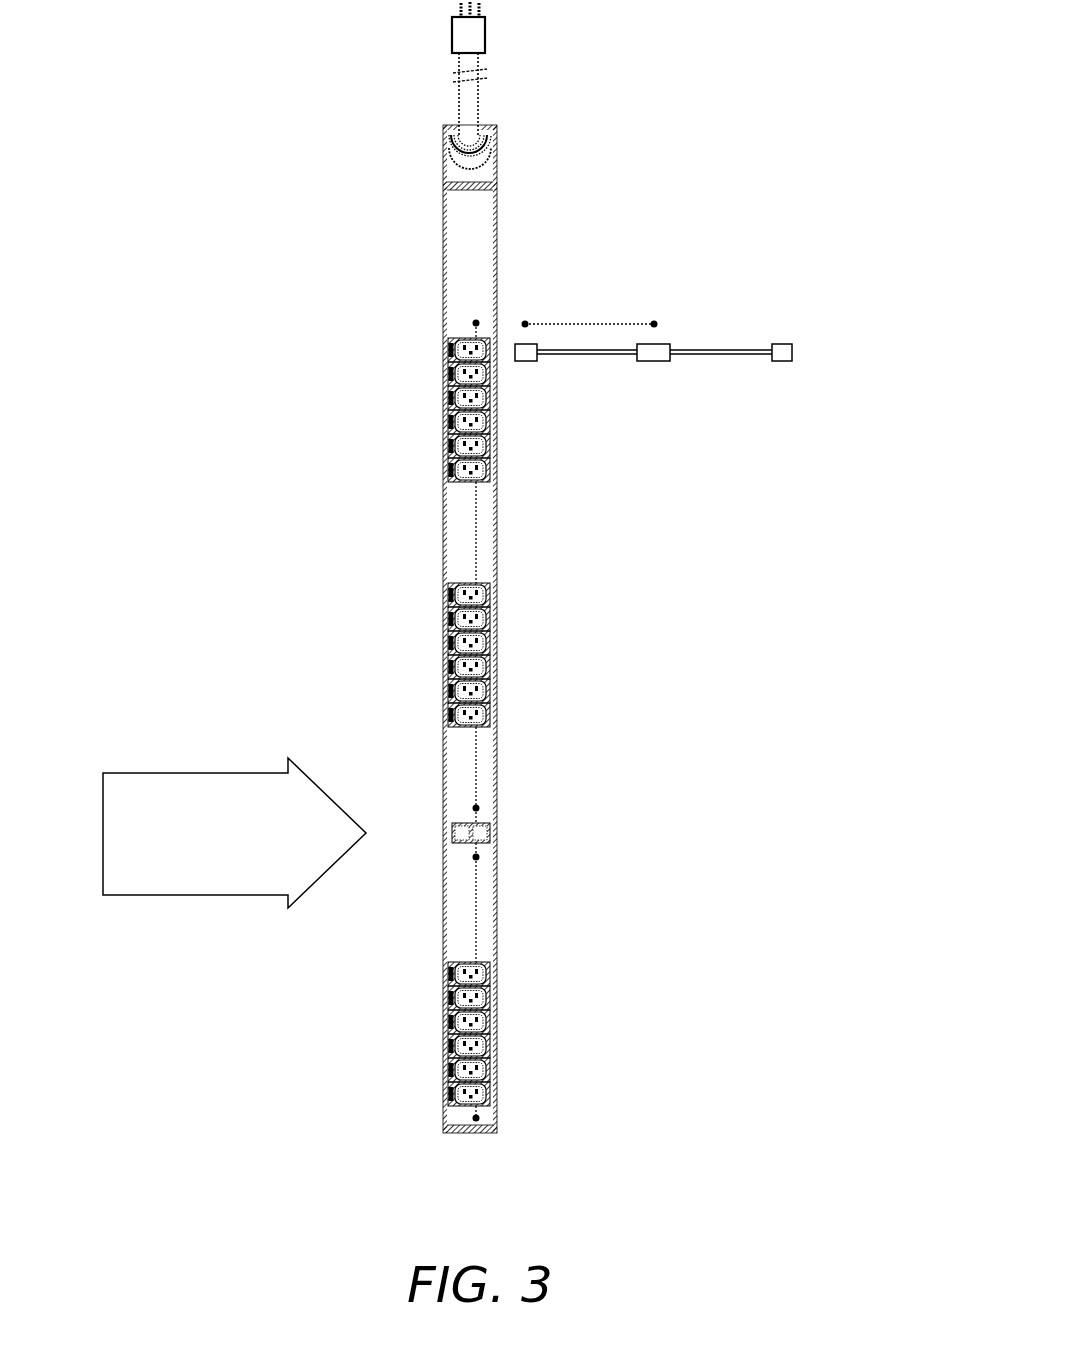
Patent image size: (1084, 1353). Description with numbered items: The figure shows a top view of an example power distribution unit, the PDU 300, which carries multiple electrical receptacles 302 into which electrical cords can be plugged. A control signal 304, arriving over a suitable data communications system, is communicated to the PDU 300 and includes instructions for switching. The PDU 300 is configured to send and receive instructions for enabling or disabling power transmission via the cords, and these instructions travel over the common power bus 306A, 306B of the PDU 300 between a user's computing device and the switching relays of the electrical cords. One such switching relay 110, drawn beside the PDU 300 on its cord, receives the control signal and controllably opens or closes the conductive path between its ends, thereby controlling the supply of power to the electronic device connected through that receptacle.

The PDU 300 is at (443, 242).
The electrical receptacles 302 is at (480, 975).
The control signal 304 is at (234, 833).
The common power bus 306A is at (476, 530).
The common power bus 306B is at (590, 322).
The switching relay 110 is at (779, 343).